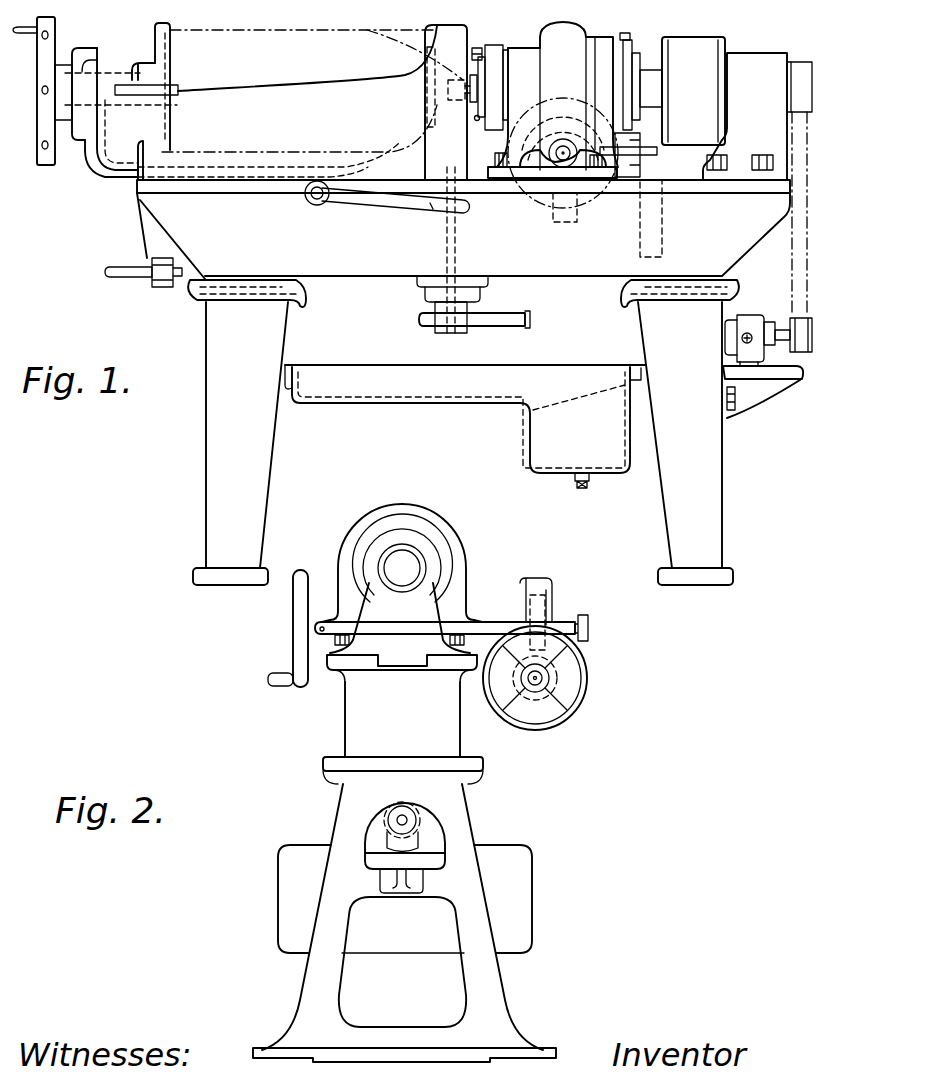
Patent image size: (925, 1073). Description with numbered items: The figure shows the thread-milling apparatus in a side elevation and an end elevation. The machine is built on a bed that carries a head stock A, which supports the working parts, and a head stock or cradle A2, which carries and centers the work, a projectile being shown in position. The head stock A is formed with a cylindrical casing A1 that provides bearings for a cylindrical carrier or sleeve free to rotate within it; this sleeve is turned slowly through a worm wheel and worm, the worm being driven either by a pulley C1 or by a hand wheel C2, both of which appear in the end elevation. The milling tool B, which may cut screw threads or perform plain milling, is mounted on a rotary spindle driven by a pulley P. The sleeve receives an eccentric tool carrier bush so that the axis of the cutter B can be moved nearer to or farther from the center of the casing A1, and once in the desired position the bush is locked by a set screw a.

In FIG. 1, the head stock A is at (757, 116).
In FIG. 2, the head stock A is at (420, 497).
In FIG. 1, the cylindrical casing A1 is at (575, 139).
In FIG. 1, the head stock or cradle A2 is at (448, 32).
In FIG. 1, the set screw a is at (477, 48).
In FIG. 1, the milling tool B is at (450, 88).
In FIG. 1, the pulley P is at (693, 91).
In FIG. 2, the pulley C1 is at (583, 687).
In FIG. 2, the hand wheel C2 is at (298, 686).